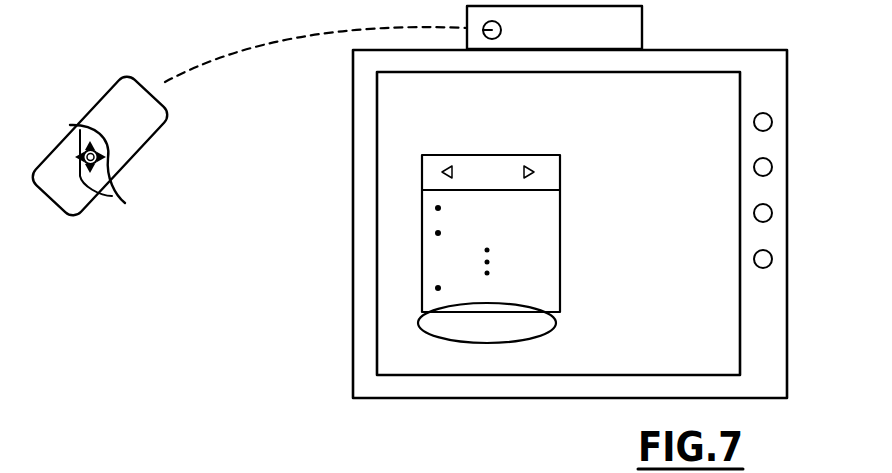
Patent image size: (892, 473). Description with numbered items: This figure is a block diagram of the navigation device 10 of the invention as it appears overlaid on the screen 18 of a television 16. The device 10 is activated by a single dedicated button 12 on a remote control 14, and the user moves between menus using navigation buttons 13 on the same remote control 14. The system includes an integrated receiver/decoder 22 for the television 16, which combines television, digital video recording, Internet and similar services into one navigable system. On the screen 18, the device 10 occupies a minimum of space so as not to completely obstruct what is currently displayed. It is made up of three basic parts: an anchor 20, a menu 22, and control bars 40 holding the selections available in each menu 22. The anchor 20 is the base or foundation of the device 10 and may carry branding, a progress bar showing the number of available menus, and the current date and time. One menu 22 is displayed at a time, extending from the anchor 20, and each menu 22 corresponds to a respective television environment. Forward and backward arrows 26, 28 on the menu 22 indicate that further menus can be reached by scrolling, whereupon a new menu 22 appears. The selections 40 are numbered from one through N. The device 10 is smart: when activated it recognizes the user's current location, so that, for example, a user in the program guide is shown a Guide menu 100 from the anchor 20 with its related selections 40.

The device 10 is at (134, 261).
The button 12 is at (100, 157).
The navigation buttons 13 is at (78, 126).
The remote control 14 is at (97, 112).
The television 16 is at (745, 46).
The screen 18 is at (377, 126).
The anchor 20 is at (540, 341).
The menu 22 is at (642, 30).
The forward arrow 26 is at (448, 171).
The backward arrow 28 is at (528, 167).
The selections 40 is at (567, 200).
The Guide menu 100 is at (375, 462).